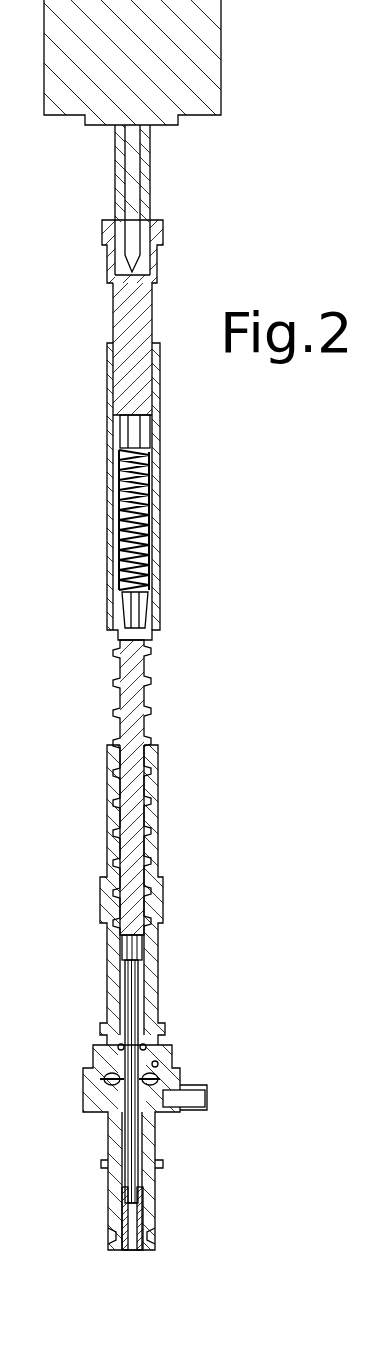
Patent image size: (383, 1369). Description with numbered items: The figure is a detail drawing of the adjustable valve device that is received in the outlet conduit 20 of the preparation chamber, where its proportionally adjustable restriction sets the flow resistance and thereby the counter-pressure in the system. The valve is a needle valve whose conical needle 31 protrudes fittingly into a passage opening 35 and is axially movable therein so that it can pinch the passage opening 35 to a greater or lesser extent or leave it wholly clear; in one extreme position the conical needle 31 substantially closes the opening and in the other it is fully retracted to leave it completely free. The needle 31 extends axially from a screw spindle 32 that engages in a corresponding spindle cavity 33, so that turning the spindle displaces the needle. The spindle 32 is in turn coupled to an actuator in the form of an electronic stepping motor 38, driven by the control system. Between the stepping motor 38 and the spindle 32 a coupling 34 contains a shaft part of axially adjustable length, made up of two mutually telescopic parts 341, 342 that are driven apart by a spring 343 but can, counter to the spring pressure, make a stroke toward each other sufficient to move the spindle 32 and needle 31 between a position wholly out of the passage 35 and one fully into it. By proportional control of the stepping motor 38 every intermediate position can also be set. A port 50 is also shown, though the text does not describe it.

The electronic stepping motor 38 is at (213, 57).
The coupling 34 is at (152, 192).
The telescopic part 341 is at (116, 327).
The spring 343 is at (108, 542).
The telescopic part 342 is at (106, 615).
The screw spindle 32 is at (150, 700).
The spindle cavity 33 is at (158, 985).
The outlet conduit 20 is at (160, 1067).
The port 50 is at (207, 1097).
The conical needle 31 is at (110, 1140).
The passage opening 35 is at (146, 1206).